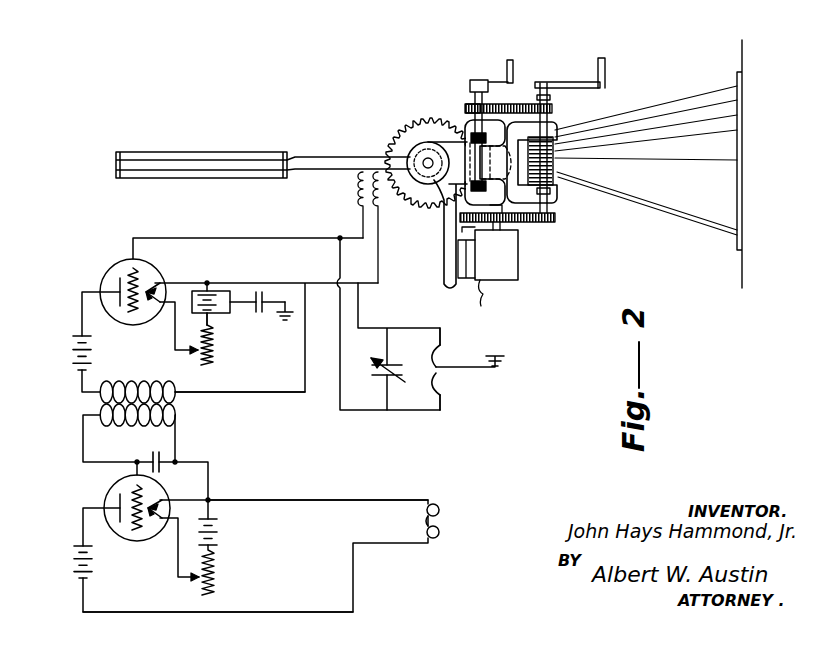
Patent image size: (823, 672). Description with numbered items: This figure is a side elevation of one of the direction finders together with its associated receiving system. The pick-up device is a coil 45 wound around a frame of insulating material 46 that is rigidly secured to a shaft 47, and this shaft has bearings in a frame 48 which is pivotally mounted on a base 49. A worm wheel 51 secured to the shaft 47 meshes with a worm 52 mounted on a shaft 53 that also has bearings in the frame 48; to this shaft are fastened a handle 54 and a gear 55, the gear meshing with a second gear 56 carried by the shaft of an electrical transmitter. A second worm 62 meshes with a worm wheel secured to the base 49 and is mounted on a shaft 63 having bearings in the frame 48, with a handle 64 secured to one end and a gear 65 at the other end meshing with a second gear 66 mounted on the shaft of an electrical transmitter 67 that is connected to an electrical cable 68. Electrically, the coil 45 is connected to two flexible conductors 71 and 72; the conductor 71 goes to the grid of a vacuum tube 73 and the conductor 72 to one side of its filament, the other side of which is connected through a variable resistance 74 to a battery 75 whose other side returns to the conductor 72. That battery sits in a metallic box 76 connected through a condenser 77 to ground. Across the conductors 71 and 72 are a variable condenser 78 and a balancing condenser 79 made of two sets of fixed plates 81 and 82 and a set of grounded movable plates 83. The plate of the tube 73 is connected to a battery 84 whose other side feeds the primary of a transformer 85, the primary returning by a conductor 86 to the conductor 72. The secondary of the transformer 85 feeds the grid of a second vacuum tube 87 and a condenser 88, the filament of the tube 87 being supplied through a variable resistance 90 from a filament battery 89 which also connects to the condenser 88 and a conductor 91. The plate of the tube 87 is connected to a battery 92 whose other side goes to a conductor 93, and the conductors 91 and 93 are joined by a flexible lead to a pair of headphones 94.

The coil 45 is at (238, 162).
The frame of insulating material 46 is at (264, 157).
The shaft 47 is at (428, 163).
The frame 48 is at (446, 142).
The base 49 is at (674, 220).
The worm wheel 51 is at (392, 140).
The worm 52 is at (511, 162).
The shaft 53 is at (477, 106).
The handle 54 is at (500, 80).
The gear 55 is at (468, 106).
The second gear 56 is at (536, 100).
The worm 62 is at (555, 170).
The shaft 63 is at (552, 90).
The handle 64 is at (617, 62).
The gear 65 is at (556, 220).
The second gear 66 is at (518, 228).
The electrical transmitter 67 is at (508, 272).
The electrical cable 68 is at (480, 288).
The flexible conductor 71 is at (352, 188).
The flexible conductor 72 is at (383, 212).
The vacuum tube 73 is at (112, 268).
The variable resistance 74 is at (214, 338).
The battery 75 is at (222, 308).
The metallic box 76 is at (198, 292).
The condenser 77 is at (274, 320).
The variable condenser 78 is at (374, 372).
The balancing condenser 79 is at (434, 382).
The fixed plates 81 is at (440, 396).
The fixed plates 82 is at (432, 350).
The movable plates 83 is at (460, 346).
The battery 84 is at (70, 352).
The transformer 85 is at (88, 402).
The conductor 86 is at (270, 390).
The second vacuum tube 87 is at (104, 496).
The condenser 88 is at (152, 462).
The filament battery 89 is at (230, 532).
The variable resistance 90 is at (216, 570).
The conductor 91 is at (258, 500).
The battery 92 is at (70, 556).
The conductor 93 is at (284, 612).
The headphones 94 is at (444, 524).